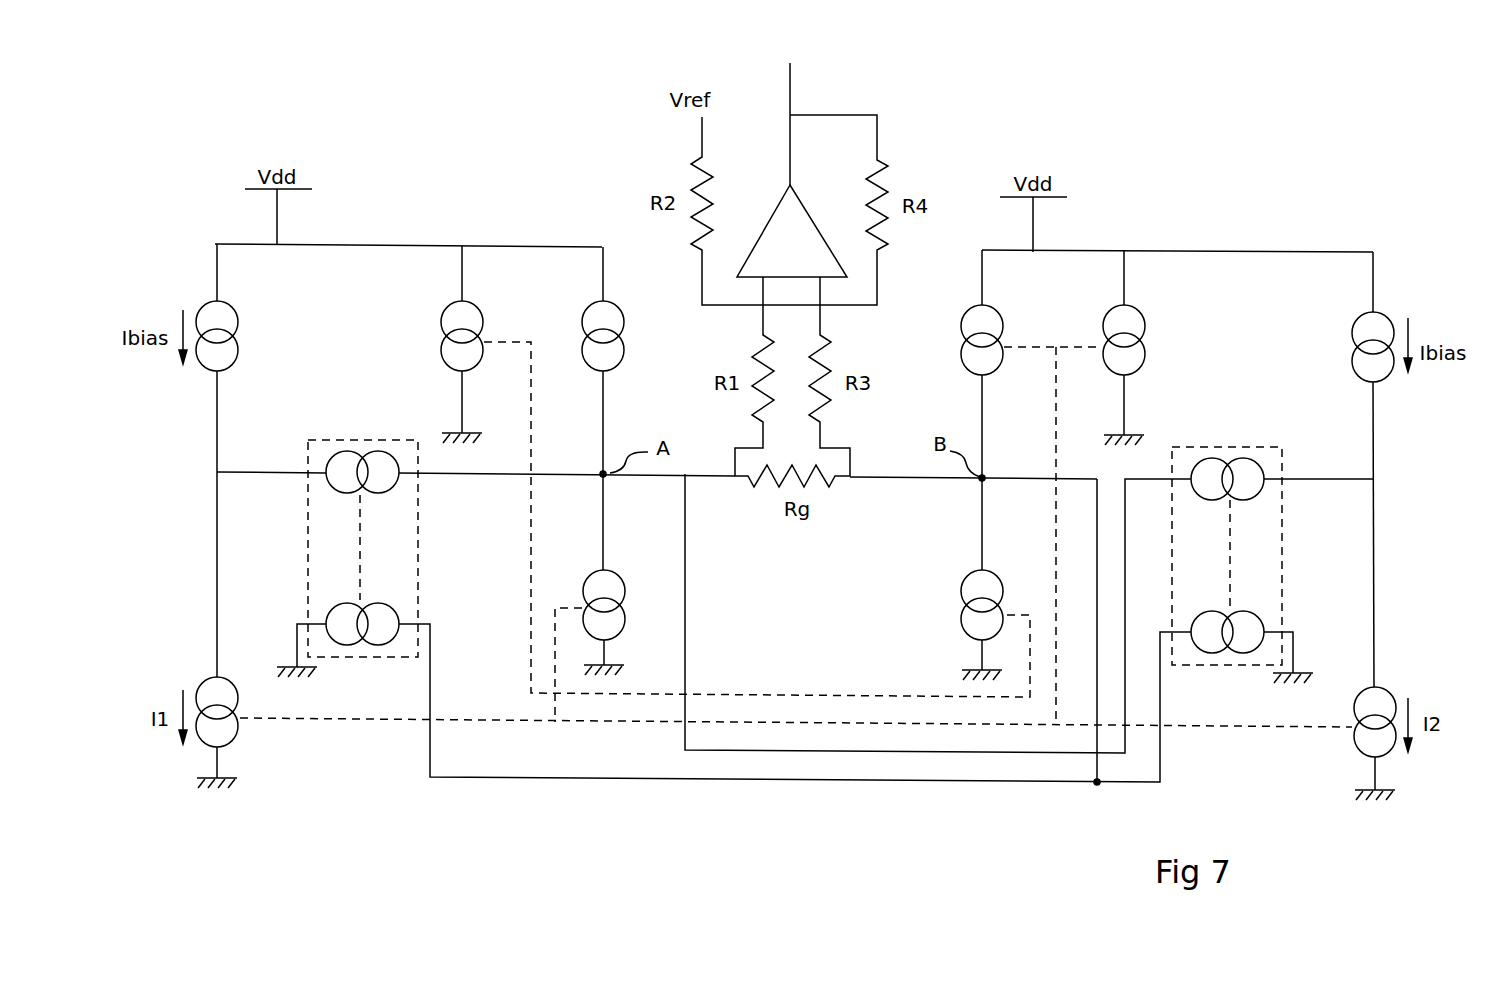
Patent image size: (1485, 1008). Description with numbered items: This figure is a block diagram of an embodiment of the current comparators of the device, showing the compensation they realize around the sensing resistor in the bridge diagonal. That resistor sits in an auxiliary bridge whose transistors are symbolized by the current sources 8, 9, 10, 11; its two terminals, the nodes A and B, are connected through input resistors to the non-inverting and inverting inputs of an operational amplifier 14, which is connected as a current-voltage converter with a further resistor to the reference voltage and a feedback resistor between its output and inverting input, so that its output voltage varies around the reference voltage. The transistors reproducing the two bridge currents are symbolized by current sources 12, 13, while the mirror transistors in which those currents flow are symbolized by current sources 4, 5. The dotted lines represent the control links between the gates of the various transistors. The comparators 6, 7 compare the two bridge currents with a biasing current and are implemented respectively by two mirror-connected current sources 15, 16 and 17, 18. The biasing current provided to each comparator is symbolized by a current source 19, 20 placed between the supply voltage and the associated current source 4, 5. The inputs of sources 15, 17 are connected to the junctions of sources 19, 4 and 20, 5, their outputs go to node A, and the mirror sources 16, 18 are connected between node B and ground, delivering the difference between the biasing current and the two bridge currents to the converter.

The current source 4 is at (240, 696).
The current source 5 is at (1350, 718).
The comparator 6 is at (337, 439).
The comparator 7 is at (1261, 454).
The current source 8 is at (625, 350).
The current source 9 is at (594, 568).
The current source 10 is at (1003, 325).
The current source 11 is at (1003, 587).
The current source 12 is at (440, 338).
The current source 13 is at (1146, 326).
The operational amplifier 14 is at (817, 226).
The mirror-connected current source 15 is at (362, 446).
The mirror-connected current source 16 is at (348, 648).
The mirror-connected current source 17 is at (1208, 458).
The mirror-connected current source 18 is at (1212, 655).
The current source 19 is at (239, 322).
The current source 20 is at (1351, 336).